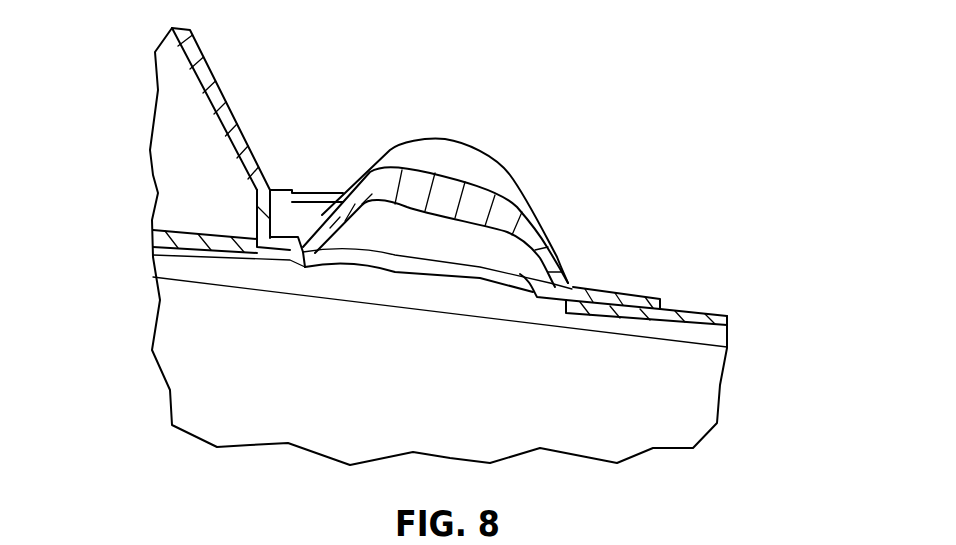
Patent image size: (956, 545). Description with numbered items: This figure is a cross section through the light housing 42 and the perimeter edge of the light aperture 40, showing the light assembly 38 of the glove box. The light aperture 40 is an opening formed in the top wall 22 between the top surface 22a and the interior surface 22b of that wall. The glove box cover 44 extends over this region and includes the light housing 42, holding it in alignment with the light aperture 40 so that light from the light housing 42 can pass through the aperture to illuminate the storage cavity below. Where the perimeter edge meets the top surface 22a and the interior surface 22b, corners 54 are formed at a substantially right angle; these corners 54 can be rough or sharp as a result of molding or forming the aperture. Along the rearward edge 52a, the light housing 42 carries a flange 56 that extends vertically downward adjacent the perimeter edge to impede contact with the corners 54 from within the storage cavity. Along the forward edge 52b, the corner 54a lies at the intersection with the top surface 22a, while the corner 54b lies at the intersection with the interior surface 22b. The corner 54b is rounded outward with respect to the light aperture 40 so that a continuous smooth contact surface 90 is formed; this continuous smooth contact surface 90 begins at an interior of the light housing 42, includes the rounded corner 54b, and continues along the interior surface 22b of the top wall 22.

The top wall 22 is at (720, 319).
The top surface 22a is at (668, 303).
The interior surface 22b is at (648, 320).
The light assembly 38 is at (563, 168).
The light aperture 40 is at (405, 264).
The light housing 42 is at (502, 190).
The glove box cover 44 is at (213, 95).
The rearward edge 52a is at (300, 268).
The forward edge 52b is at (565, 312).
The corners 54 is at (298, 237).
The corner 54a is at (568, 303).
The corner 54b is at (573, 306).
The flange 56 is at (297, 255).
The continuous smooth contact surface 90 is at (532, 290).